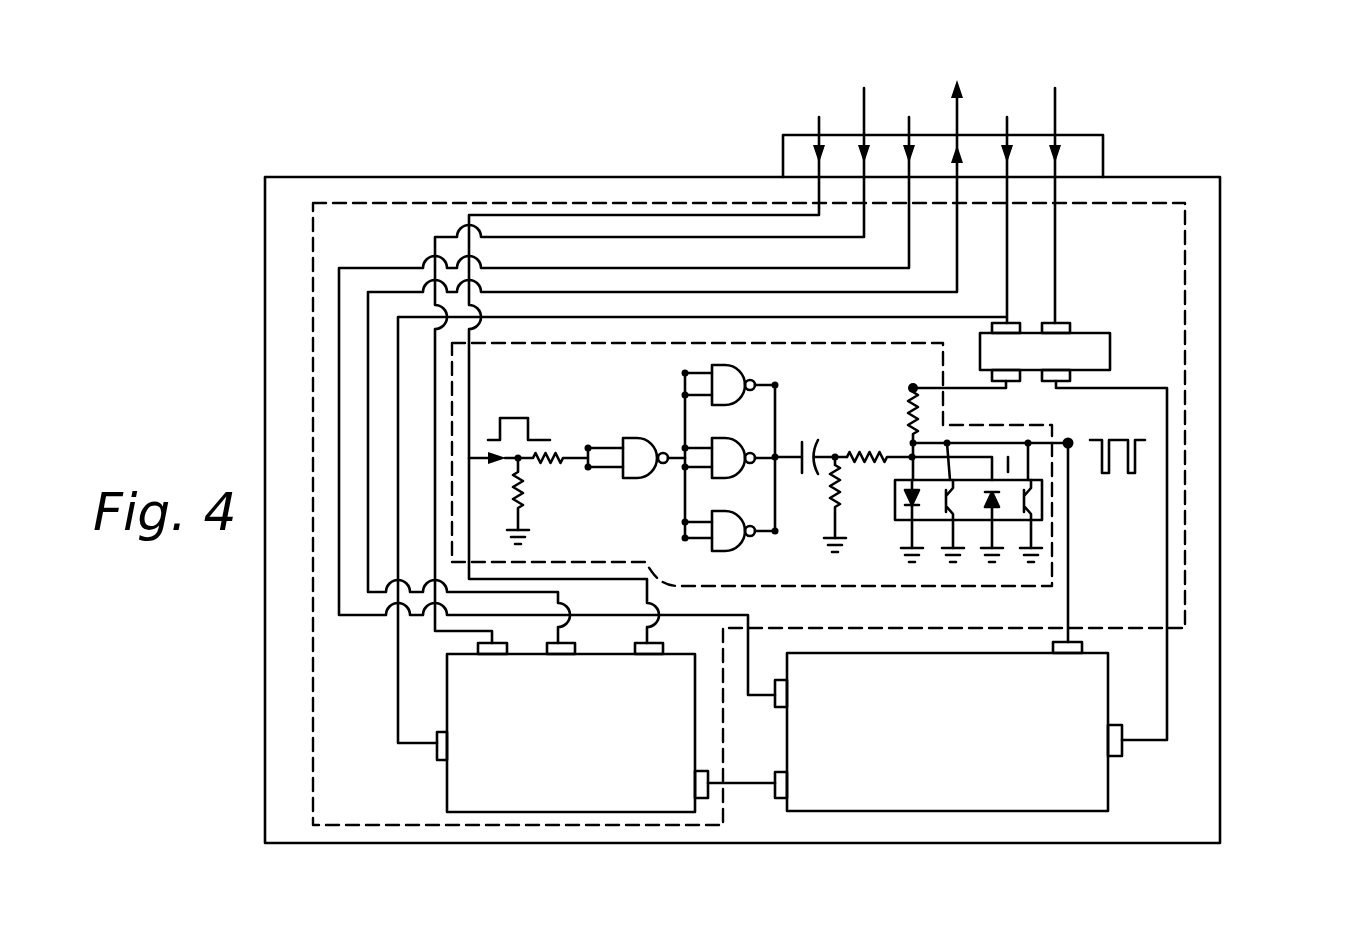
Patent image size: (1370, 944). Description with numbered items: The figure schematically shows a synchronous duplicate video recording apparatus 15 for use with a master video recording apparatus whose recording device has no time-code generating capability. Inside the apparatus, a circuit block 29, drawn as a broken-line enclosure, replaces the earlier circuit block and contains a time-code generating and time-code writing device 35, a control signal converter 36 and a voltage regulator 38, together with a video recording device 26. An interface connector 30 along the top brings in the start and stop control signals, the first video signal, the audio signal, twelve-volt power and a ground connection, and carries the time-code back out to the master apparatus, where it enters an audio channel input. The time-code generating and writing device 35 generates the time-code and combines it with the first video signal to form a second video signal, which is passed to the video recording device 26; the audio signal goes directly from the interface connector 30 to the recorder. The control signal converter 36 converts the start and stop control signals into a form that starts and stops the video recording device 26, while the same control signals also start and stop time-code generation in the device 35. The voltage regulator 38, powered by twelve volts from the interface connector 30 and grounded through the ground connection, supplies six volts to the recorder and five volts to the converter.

The synchronous duplicate video recording apparatus 15 is at (1302, 424).
The video recording device 26 is at (938, 828).
The circuit block 29 is at (428, 836).
The interface connector 30 is at (1108, 153).
The time-code generating and time-code writing device 35 is at (598, 826).
The control signal converter 36 is at (612, 355).
The voltage regulator 38 is at (1120, 348).